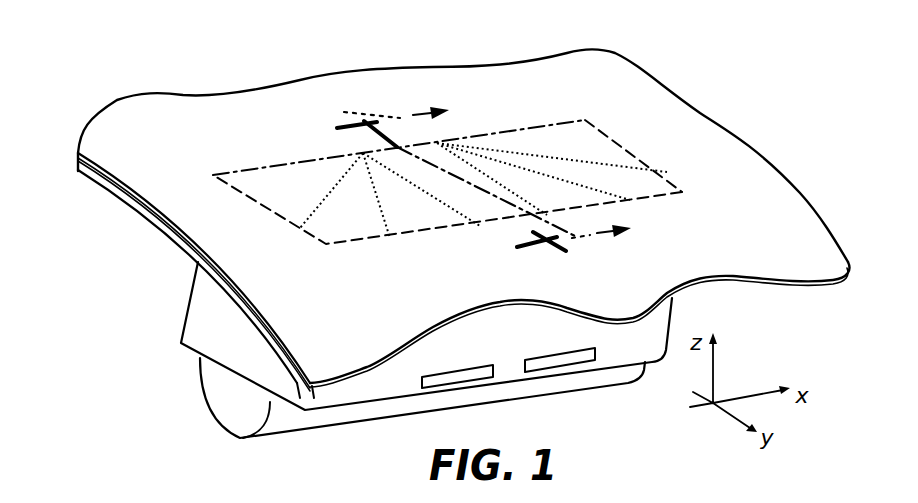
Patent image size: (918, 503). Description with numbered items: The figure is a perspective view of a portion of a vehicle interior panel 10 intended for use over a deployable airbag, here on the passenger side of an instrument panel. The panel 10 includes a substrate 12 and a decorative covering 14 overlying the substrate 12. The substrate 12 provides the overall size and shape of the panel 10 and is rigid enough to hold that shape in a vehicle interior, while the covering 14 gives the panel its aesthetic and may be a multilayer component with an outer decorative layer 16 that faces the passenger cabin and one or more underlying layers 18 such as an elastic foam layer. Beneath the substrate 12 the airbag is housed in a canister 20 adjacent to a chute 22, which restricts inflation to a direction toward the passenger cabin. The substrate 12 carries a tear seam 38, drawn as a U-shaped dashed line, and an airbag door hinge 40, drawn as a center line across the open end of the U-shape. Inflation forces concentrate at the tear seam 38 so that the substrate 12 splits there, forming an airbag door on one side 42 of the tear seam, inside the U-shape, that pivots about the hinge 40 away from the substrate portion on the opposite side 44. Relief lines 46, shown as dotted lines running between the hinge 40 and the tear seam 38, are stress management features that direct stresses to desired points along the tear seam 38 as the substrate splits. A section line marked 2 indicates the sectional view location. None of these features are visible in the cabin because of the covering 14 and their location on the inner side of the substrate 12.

The vehicle interior panel 10 is at (215, 52).
The substrate 12 is at (128, 197).
The decorative covering 14 is at (80, 125).
The outer decorative layer 16 is at (733, 173).
The underlying layer 18 is at (815, 279).
The canister 20 is at (218, 402).
The chute 22 is at (200, 328).
The tear seam 38 is at (653, 198).
The airbag door hinge 40 is at (498, 130).
The one side of the tear seam 42 is at (590, 125).
The opposite side of the tear seam 44 is at (653, 133).
The relief lines 46 is at (318, 206).
The section line 2- 2 is at (484, 181).